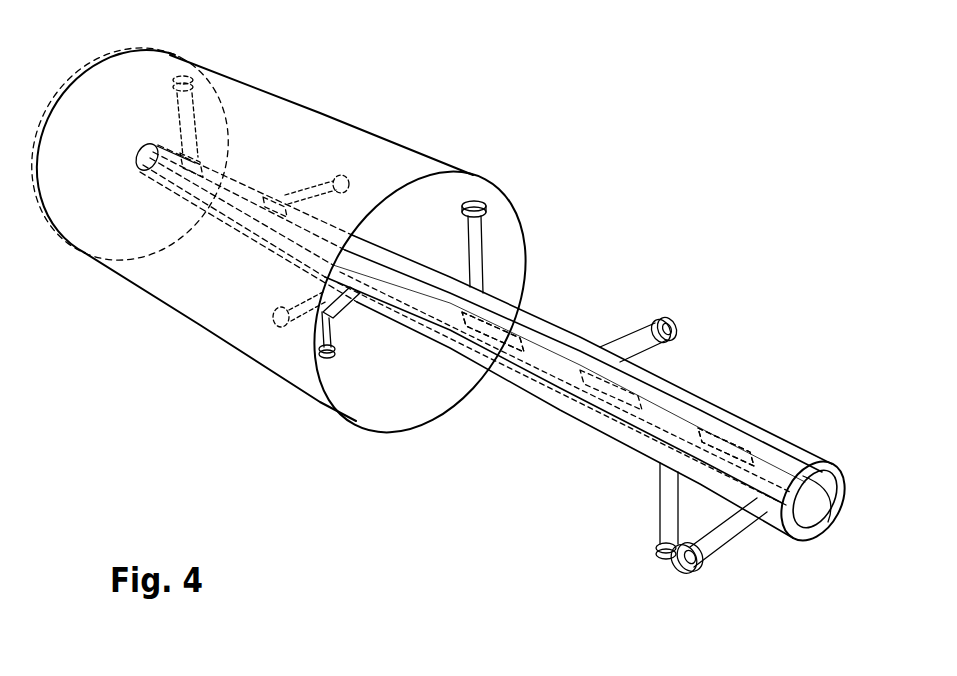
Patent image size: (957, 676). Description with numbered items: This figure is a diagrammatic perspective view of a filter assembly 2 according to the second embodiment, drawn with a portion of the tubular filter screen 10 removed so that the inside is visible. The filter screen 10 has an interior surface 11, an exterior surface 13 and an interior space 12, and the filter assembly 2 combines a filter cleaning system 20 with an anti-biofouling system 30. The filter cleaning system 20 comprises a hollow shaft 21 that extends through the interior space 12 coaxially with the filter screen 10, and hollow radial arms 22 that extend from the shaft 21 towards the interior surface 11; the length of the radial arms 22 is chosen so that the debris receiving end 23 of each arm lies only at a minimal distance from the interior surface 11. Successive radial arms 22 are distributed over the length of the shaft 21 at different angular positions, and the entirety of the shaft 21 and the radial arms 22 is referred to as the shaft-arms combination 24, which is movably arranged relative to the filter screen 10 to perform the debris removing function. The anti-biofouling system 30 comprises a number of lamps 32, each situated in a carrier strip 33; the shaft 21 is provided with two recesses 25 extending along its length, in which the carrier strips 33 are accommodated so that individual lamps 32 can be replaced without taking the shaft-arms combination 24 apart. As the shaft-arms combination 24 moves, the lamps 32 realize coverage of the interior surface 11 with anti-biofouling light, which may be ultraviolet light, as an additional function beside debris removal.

The filter assembly 2 is at (422, 112).
The tubular filter screen 10 is at (160, 300).
The interior surface 11 is at (372, 402).
The interior space 12 is at (392, 372).
The exterior surface 13 is at (212, 297).
The filter cleaning system 20 is at (633, 576).
The hollow shaft 21 is at (767, 438).
The radial arms 22 is at (622, 345).
The debris receiving end 23 is at (662, 320).
The shaft-arms combination 24 is at (715, 535).
The recesses 25 is at (830, 515).
The anti-biofouling system 30 is at (750, 376).
The lamps 32 is at (690, 430).
The carrier strips 33 is at (611, 371).